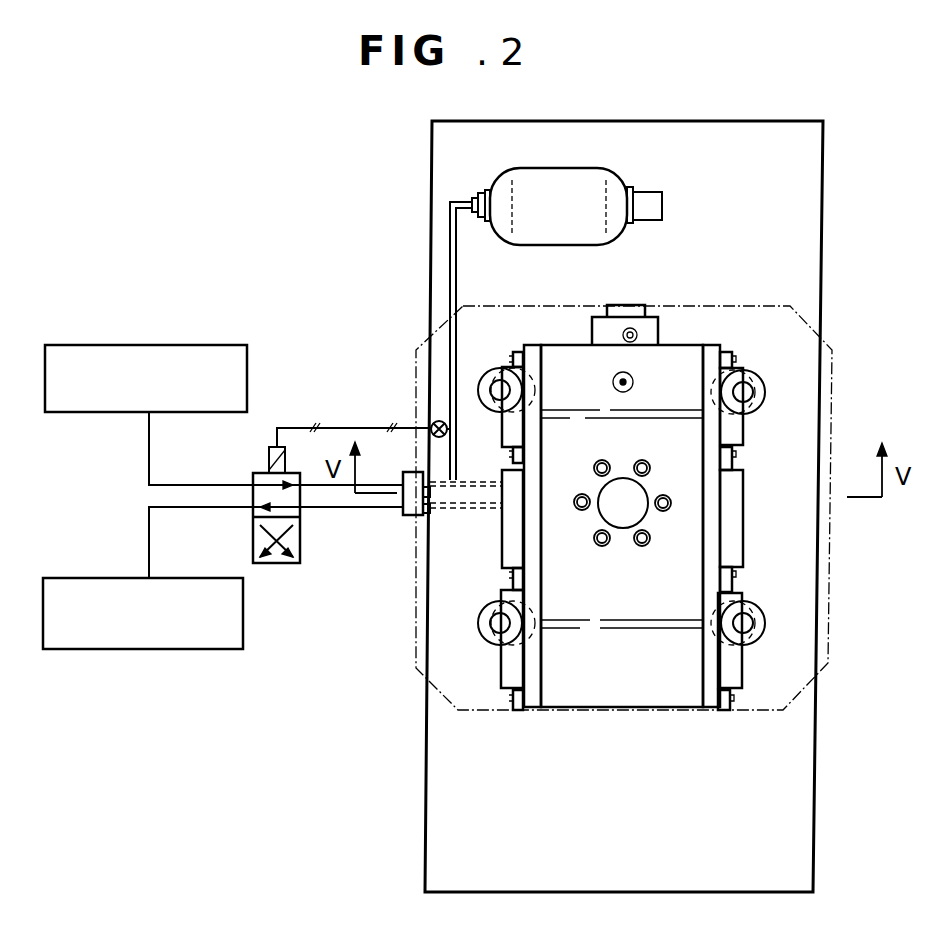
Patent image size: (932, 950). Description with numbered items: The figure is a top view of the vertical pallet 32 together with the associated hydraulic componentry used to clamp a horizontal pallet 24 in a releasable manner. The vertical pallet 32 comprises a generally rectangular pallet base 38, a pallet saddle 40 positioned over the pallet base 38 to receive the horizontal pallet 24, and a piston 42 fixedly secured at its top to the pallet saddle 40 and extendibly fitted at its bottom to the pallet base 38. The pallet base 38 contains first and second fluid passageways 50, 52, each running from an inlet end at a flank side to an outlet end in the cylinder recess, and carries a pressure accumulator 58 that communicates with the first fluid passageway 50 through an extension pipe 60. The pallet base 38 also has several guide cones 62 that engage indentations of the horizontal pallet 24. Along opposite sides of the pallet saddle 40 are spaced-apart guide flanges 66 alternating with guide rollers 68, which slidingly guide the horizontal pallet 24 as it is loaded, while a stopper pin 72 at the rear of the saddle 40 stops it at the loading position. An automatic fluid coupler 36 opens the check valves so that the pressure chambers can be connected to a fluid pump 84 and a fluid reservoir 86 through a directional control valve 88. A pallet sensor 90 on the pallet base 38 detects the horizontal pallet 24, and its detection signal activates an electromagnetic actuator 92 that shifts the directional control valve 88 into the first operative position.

The horizontal pallet 24 is at (834, 400).
The vertical pallet 32 is at (845, 622).
The automatic fluid coupler 36 is at (402, 518).
The pallet base 38 is at (438, 766).
The pallet saddle 40 is at (557, 670).
The piston 42 is at (605, 508).
The first fluid passageway 50 is at (470, 478).
The second fluid passageway 52 is at (455, 508).
The pressure accumulator 58 is at (505, 185).
The extension pipe 60 is at (450, 257).
The guide cones 62 is at (478, 623).
The guide flanges 66 is at (500, 388).
The guide rollers 68 is at (513, 352).
The stopper pin 72 is at (632, 335).
The fluid pump 84 is at (150, 343).
The fluid reservoir 86 is at (160, 650).
The directional control valve 88 is at (290, 565).
The pallet sensor 90 is at (430, 424).
The electromagnetic actuator 92 is at (268, 457).